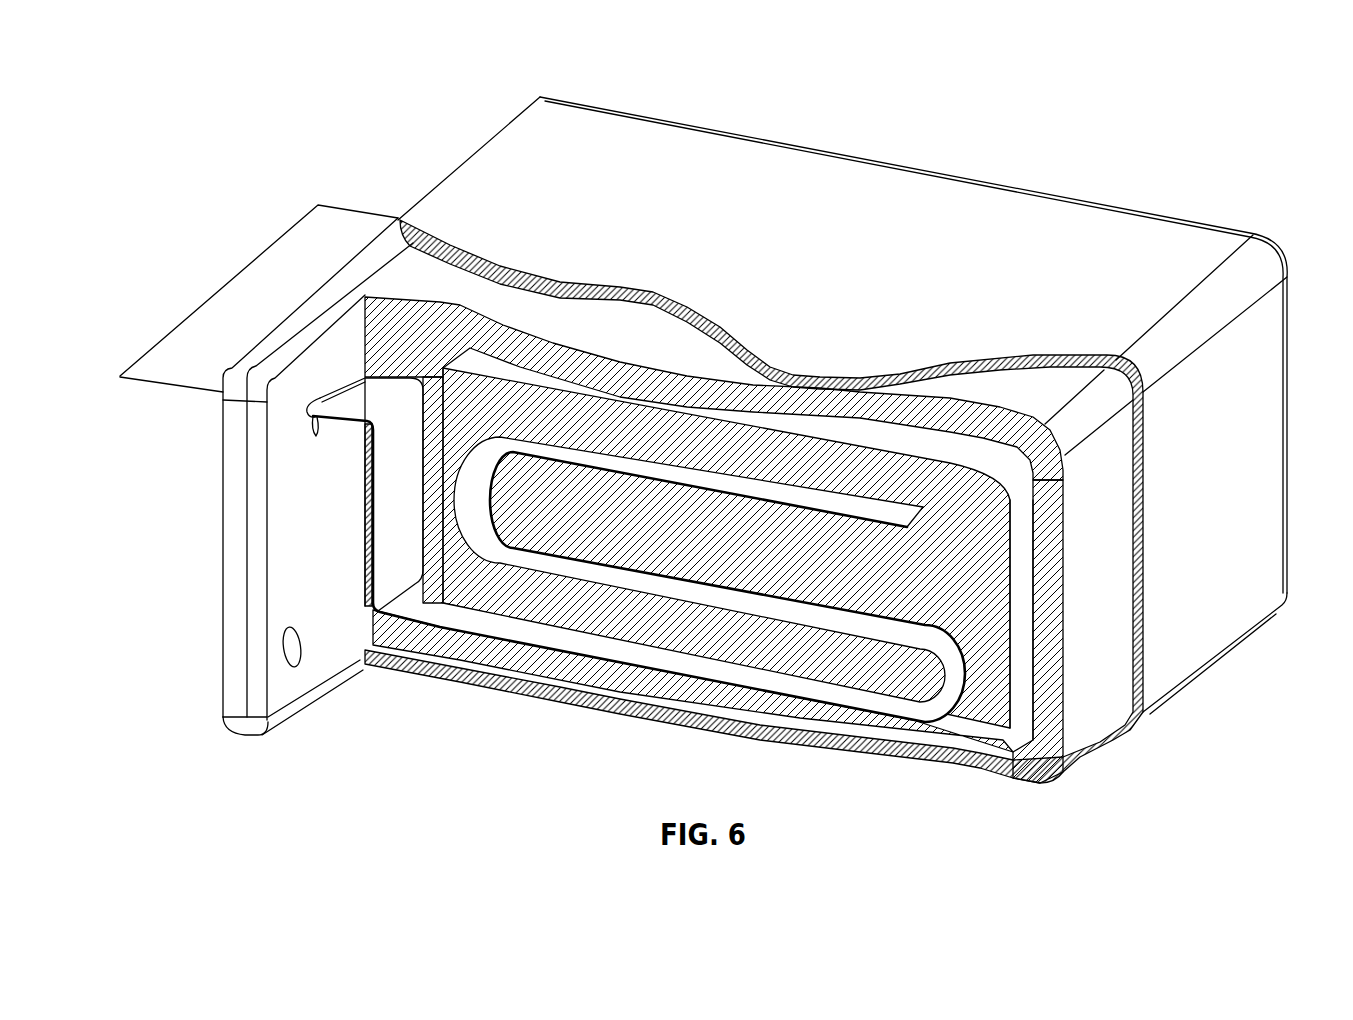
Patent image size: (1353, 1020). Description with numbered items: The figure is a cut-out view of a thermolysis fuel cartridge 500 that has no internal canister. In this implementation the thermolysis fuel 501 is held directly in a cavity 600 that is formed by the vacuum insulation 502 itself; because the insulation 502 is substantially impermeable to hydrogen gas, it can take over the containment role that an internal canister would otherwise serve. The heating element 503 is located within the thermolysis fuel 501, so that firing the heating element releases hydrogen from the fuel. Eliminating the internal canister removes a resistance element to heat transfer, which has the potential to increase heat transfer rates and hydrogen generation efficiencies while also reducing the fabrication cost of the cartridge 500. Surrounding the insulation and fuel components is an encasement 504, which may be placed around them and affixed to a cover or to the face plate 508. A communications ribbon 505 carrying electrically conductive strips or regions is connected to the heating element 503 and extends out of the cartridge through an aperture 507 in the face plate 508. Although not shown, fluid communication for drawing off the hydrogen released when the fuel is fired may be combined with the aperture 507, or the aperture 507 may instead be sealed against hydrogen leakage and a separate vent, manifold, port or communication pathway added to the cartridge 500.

The thermolysis fuel cartridge 500 is at (190, 102).
The thermolysis fuel 501 is at (982, 550).
The vacuum insulation 502 is at (1127, 507).
The heating element 503 is at (950, 663).
The encasement 504 is at (1203, 632).
The communications ribbon 505 is at (387, 517).
The aperture 507 is at (333, 379).
The face plate 508 is at (322, 650).
The cavity 600 is at (1015, 665).